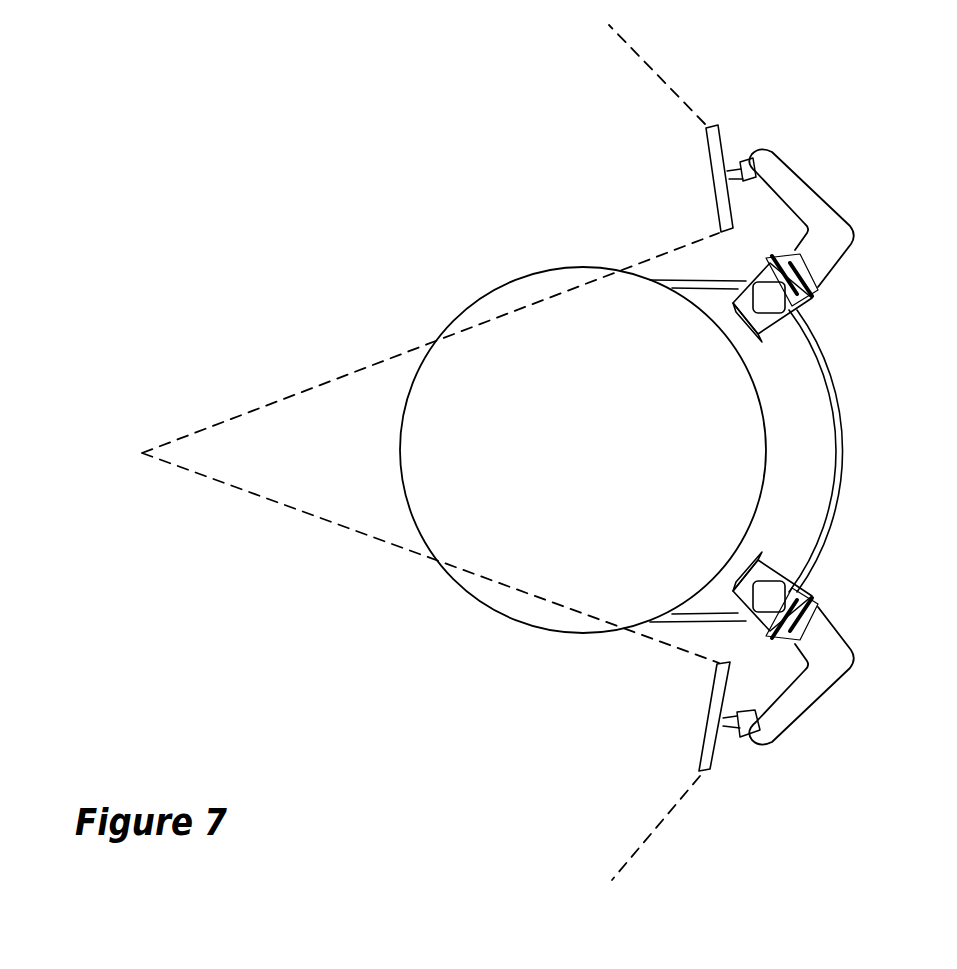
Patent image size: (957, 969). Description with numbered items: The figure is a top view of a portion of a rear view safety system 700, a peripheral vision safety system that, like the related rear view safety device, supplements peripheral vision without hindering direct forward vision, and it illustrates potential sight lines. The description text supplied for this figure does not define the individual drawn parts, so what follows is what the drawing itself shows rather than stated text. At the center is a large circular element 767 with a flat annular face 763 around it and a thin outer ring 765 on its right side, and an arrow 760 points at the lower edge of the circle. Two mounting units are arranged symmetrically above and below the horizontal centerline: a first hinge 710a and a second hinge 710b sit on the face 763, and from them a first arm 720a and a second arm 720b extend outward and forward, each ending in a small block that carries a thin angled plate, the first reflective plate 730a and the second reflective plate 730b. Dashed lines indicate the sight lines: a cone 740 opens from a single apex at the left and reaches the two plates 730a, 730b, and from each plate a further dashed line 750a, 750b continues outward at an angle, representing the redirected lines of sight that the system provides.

The camera assembly 700 is at (293, 211).
The first hinge 710a is at (808, 321).
The second hinge 710b is at (800, 577).
The first arm 720a is at (823, 205).
The second arm 720b is at (811, 693).
The first mirror 730a is at (724, 134).
The second mirror 730b is at (718, 753).
The field of view 740 is at (337, 465).
The first reflected field of view 750a is at (482, 188).
The second reflected field of view 750b is at (607, 742).
The lens edge 760 is at (456, 583).
The housing front face 763 is at (807, 463).
The housing ring 765 is at (843, 454).
The lens 767 is at (599, 465).